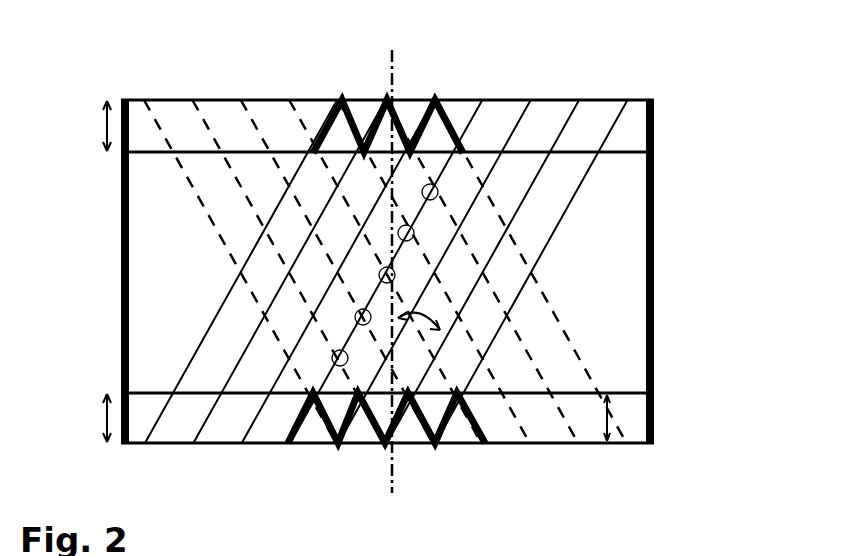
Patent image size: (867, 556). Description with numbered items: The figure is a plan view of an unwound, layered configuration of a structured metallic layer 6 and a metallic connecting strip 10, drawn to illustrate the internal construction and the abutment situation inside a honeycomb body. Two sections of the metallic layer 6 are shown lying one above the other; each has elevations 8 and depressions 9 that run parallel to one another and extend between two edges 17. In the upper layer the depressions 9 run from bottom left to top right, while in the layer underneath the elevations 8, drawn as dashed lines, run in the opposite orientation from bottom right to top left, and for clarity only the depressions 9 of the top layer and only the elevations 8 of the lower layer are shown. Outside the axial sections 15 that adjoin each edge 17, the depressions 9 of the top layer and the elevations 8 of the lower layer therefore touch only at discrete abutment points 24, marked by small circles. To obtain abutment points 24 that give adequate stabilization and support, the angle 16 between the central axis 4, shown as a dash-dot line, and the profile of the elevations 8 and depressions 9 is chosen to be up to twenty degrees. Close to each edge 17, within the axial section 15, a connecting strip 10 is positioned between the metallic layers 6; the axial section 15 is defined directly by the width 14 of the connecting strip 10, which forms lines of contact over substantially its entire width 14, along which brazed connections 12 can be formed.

The central axis 4 is at (400, 62).
The metallic layer 6 is at (652, 209).
The elevations 8 is at (197, 193).
The depressions 9 is at (215, 328).
The connecting strip 10 is at (632, 127).
The brazed connections 12 is at (340, 445).
The width of the connecting strip 14 is at (610, 426).
The axial section 15 is at (104, 150).
The angle 16 is at (440, 318).
The edges 17 is at (226, 98).
The abutment points 24 is at (438, 192).